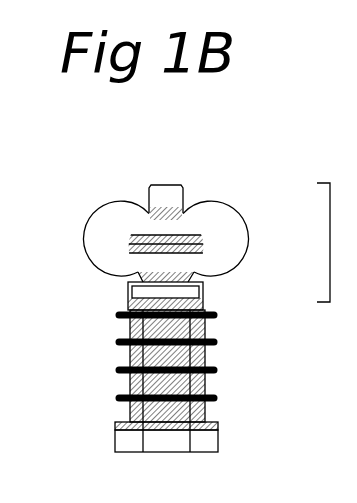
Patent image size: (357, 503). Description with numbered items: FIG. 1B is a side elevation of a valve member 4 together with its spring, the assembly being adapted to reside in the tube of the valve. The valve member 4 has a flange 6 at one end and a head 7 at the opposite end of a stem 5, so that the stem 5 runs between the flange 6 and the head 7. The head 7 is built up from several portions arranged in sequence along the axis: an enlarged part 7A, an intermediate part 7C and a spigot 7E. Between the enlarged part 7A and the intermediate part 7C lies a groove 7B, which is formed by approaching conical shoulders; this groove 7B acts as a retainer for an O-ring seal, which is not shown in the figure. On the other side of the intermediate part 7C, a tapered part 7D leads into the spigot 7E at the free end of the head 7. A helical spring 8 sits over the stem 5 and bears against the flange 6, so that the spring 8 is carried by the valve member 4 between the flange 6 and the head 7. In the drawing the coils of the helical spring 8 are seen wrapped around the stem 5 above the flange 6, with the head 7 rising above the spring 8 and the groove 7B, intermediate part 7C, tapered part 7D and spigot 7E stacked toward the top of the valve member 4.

The valve member 4 is at (110, 191).
The stem 5 is at (190, 352).
The flange 6 is at (116, 441).
The head 7 is at (192, 246).
The enlarged part 7A is at (203, 293).
The groove 7B is at (131, 272).
The intermediate part 7C is at (203, 243).
The tapered part 7D is at (137, 227).
The spigot 7E is at (186, 195).
The helical spring 8 is at (117, 314).